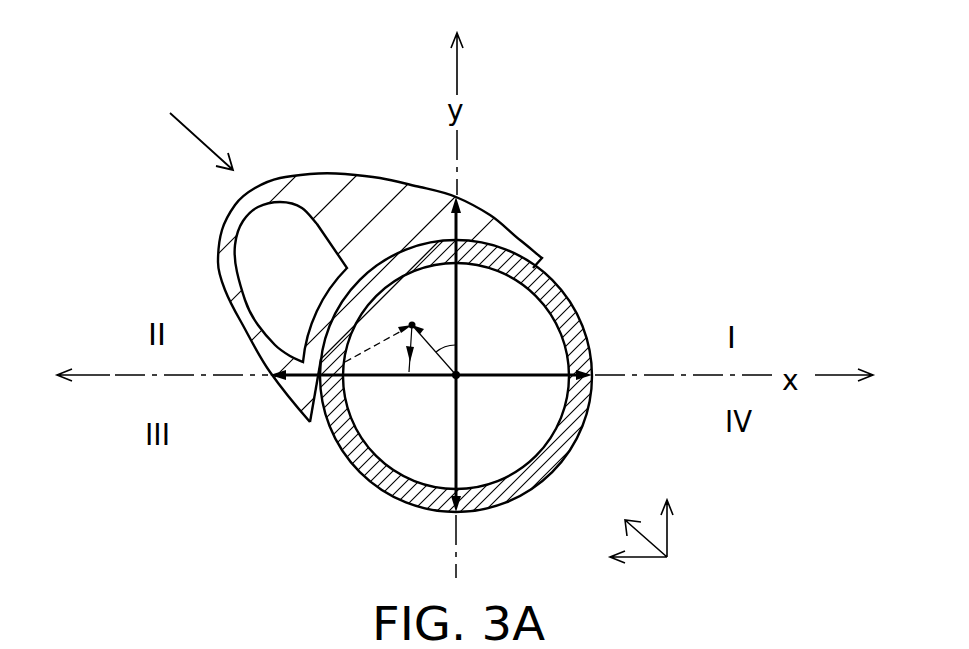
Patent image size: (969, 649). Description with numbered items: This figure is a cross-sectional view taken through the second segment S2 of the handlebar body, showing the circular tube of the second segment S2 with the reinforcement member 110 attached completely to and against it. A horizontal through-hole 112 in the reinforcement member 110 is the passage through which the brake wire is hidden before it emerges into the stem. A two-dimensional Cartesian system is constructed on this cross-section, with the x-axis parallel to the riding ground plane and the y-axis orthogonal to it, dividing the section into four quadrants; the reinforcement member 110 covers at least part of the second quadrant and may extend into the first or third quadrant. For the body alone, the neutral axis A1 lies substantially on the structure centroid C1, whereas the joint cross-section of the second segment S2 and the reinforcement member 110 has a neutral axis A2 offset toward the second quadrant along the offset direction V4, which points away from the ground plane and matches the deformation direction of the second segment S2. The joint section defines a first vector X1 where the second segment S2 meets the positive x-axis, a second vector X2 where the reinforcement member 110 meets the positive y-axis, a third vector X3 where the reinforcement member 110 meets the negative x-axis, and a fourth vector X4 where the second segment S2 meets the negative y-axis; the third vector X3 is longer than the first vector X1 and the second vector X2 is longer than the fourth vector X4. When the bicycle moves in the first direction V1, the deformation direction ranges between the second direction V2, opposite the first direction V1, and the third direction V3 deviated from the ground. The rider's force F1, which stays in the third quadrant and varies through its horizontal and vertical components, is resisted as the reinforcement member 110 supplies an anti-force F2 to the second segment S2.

The reinforcement member 110 is at (342, 176).
The horizontal through-hole 112 is at (243, 270).
The second segment S2 is at (572, 305).
The structure centroid C1 is at (385, 486).
The neutral axis A1 is at (390, 476).
The neutral axis A2 is at (313, 393).
The first vector X1 is at (572, 362).
The second vector X2 is at (463, 218).
The third vector X3 is at (285, 395).
The fourth vector X4 is at (460, 457).
The first direction V1 is at (862, 374).
The second direction V2 is at (62, 377).
The third direction V3 is at (457, 47).
The offset direction V4 is at (437, 352).
The force F1 is at (629, 530).
The anti-force F2 is at (179, 120).